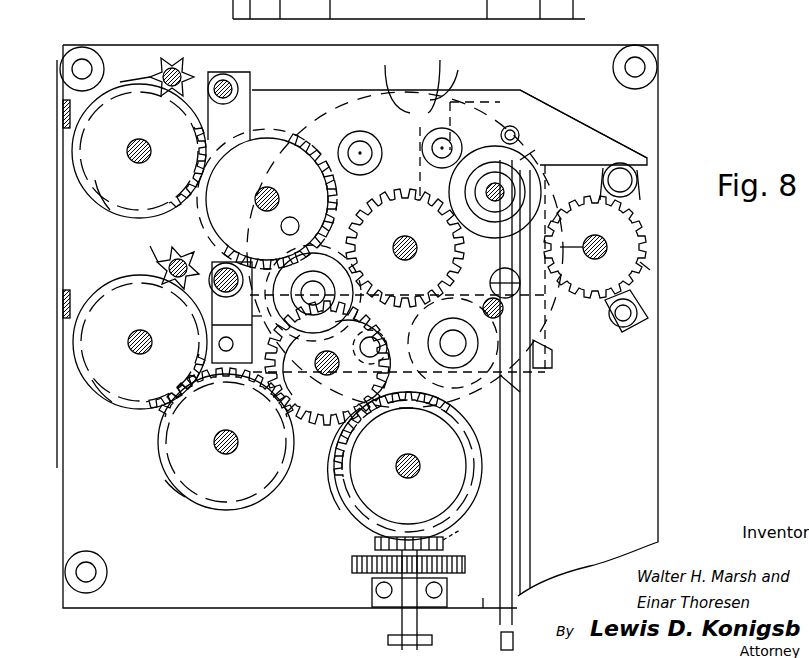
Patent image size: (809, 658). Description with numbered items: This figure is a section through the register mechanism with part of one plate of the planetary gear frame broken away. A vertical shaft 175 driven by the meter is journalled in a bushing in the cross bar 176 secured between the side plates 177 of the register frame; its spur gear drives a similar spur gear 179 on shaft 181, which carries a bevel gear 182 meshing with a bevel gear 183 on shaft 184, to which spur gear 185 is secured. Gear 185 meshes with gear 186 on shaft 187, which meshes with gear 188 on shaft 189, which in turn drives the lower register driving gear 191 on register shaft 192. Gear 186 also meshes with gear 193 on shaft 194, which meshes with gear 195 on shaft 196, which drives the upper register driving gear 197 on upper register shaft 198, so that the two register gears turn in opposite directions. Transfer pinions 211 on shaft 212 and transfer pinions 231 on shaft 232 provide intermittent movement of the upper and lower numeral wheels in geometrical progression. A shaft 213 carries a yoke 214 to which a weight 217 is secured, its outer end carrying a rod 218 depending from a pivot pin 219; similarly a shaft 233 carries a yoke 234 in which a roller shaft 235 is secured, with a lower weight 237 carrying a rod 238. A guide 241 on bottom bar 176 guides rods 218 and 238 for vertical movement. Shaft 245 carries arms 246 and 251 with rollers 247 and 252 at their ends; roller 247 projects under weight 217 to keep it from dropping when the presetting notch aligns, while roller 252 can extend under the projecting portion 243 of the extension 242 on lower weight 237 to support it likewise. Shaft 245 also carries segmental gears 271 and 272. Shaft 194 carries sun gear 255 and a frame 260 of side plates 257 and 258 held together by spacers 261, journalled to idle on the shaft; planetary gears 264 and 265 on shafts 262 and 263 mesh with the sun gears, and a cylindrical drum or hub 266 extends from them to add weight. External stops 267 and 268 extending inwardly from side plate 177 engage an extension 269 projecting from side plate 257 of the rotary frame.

The vertical shaft 175 is at (402, 615).
The cross bar 176 is at (372, 593).
The side plates 177 is at (175, 609).
The spur gear 179 is at (350, 566).
The shaft 181 is at (447, 545).
The bevel gear 182 is at (373, 545).
The bevel gear 183 is at (344, 506).
The shaft 184 is at (402, 477).
The spur gear 185 is at (340, 452).
The gear 186 is at (350, 426).
The shaft 187 is at (324, 376).
The gear 188 is at (182, 496).
The shaft 189 is at (220, 452).
The lower register driving gear 191 is at (108, 405).
The register shaft 192 is at (128, 338).
The gear 193 is at (305, 304).
The shaft 194 is at (402, 258).
The gear 195 is at (200, 226).
The shaft 196 is at (268, 188).
The upper register driving gear 197 is at (103, 208).
The upper register shaft 198 is at (134, 147).
The transfer pinions 211 is at (168, 62).
The shaft 212 is at (174, 66).
The shaft 213 is at (222, 78).
The yoke 214 is at (252, 90).
The weight 217 is at (410, 100).
The rod 218 is at (540, 517).
The pivot pin 219 is at (500, 165).
The transfer pinions 231 is at (155, 250).
The shaft 232 is at (168, 268).
The shaft 233 is at (215, 290).
The yoke 234 is at (212, 327).
The roller shaft 235 is at (218, 345).
The weight 237 is at (545, 372).
The rod 238 is at (535, 498).
The guide 241 is at (483, 600).
The extension 242 is at (470, 100).
The projecting portion 243 is at (600, 150).
The shaft 245 is at (608, 247).
The arm 246 is at (640, 190).
The roller 247 is at (633, 178).
The arm 251 is at (645, 300).
The roller 252 is at (645, 330).
The sun gear 255 is at (426, 126).
The side plate 257 is at (572, 240).
The side plate 258 is at (442, 72).
The frame 260 is at (522, 292).
The spacers 261 is at (372, 153).
The shaft 262 is at (520, 392).
The shaft 263 is at (530, 170).
The gear 264 is at (345, 97).
The gear 265 is at (262, 315).
The cylindrical drum or hub 266 is at (447, 203).
The external stop 267 is at (505, 310).
The external stop 268 is at (492, 182).
The extension 269 is at (530, 276).
The segmental gear 271 is at (650, 268).
The segmental gear 272 is at (560, 210).